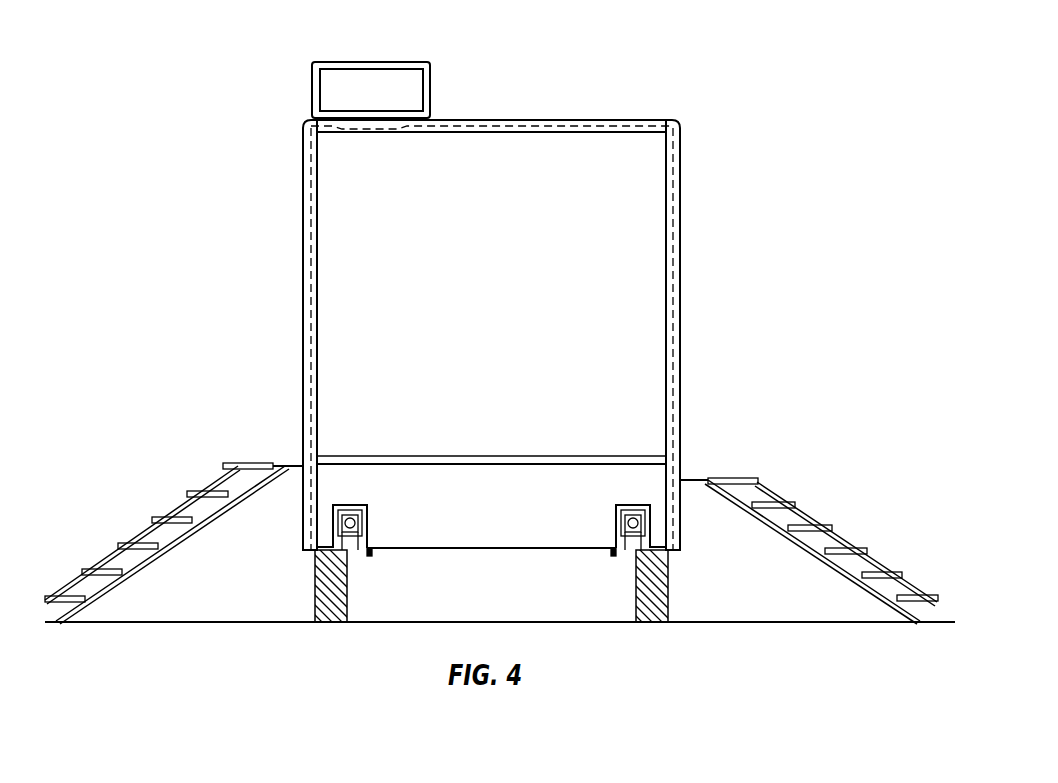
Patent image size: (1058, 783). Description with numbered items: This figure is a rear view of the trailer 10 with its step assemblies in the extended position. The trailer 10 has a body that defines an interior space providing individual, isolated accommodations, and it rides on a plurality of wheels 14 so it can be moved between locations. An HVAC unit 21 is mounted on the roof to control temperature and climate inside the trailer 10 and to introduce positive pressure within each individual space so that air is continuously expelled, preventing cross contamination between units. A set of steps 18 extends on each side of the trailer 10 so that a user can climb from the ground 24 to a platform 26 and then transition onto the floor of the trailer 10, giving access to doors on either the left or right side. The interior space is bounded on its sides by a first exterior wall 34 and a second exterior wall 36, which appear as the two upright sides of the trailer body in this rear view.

The trailer 10 is at (512, 338).
The wheels 14 is at (338, 575).
The steps 18 is at (147, 506).
The HVAC units 21 is at (372, 62).
The ground 24 is at (220, 622).
The platform 26 is at (262, 463).
The first exterior wall 34 is at (303, 325).
The second exterior wall 36 is at (680, 228).